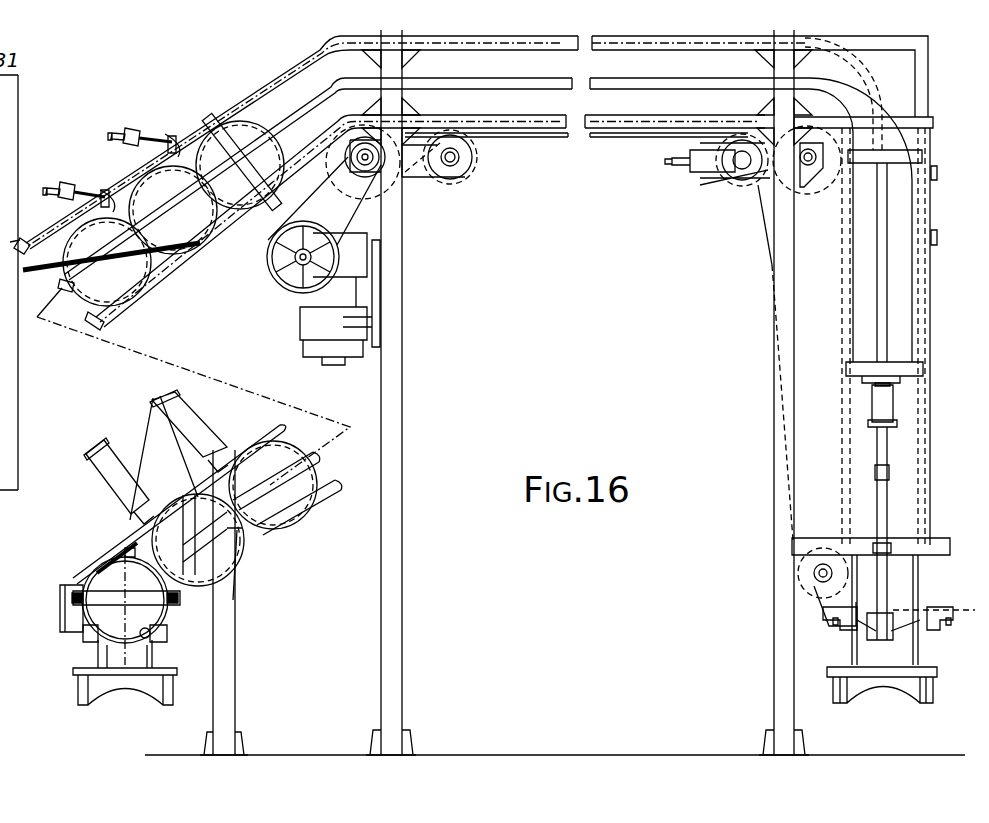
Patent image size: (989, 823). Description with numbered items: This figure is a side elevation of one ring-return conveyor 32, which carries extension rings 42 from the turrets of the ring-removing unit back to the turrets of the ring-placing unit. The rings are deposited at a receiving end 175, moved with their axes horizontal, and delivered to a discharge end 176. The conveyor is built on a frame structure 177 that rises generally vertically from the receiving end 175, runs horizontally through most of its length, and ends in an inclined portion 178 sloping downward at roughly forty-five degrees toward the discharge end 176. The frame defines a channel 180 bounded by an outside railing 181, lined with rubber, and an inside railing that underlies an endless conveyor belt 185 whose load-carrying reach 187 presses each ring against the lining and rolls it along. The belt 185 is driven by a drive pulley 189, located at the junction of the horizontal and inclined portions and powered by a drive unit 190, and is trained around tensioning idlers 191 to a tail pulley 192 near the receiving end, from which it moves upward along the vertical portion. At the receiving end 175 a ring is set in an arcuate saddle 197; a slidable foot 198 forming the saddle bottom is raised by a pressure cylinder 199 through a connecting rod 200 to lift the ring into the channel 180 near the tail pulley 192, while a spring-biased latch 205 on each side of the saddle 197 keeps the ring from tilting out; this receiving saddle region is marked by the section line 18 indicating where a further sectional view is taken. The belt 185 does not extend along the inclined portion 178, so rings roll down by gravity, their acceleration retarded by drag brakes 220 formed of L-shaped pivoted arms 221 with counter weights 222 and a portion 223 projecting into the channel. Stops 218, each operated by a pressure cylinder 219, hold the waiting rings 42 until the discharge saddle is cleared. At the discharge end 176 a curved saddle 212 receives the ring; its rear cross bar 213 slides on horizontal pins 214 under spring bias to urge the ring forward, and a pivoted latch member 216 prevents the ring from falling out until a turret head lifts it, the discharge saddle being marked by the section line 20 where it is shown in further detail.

The section line 18- 18 is at (900, 498).
The section line 20- 20 is at (128, 523).
The ring conveyor 32 is at (700, 356).
The extension ring 42 is at (268, 96).
The receiving end 175 is at (869, 697).
The discharge end 176 is at (127, 705).
The frame structure 177 is at (12, 370).
The inclined portion 178 is at (179, 102).
The channel 180 is at (2, 131).
The outside railing 181 is at (648, 36).
The endless conveyor belt 185 is at (664, 140).
The load-carrying reach 187 is at (581, 111).
The drive pulley 189 is at (374, 178).
The drive unit 190 is at (293, 300).
The tensioning idlers 191 is at (738, 181).
The tail pulley 192 is at (806, 575).
The arcuate saddle 197 is at (856, 630).
The slidable foot 198 is at (877, 676).
The pressure cylinder 199 is at (878, 404).
The connecting rod 200 is at (880, 452).
The latch 205 is at (835, 613).
The curved saddle 212 is at (150, 638).
The rear cross bar 213 is at (83, 618).
The horizontal pins 214 is at (75, 600).
The pivoted latch member 216 is at (124, 550).
The stop 218 is at (205, 451).
The pressure cylinder 219 is at (150, 402).
The drag brakes 220 is at (136, 114).
The L-shaped pivoted arms 221 is at (148, 144).
The counter weights 222 is at (128, 129).
The projecting portion 223 is at (188, 133).